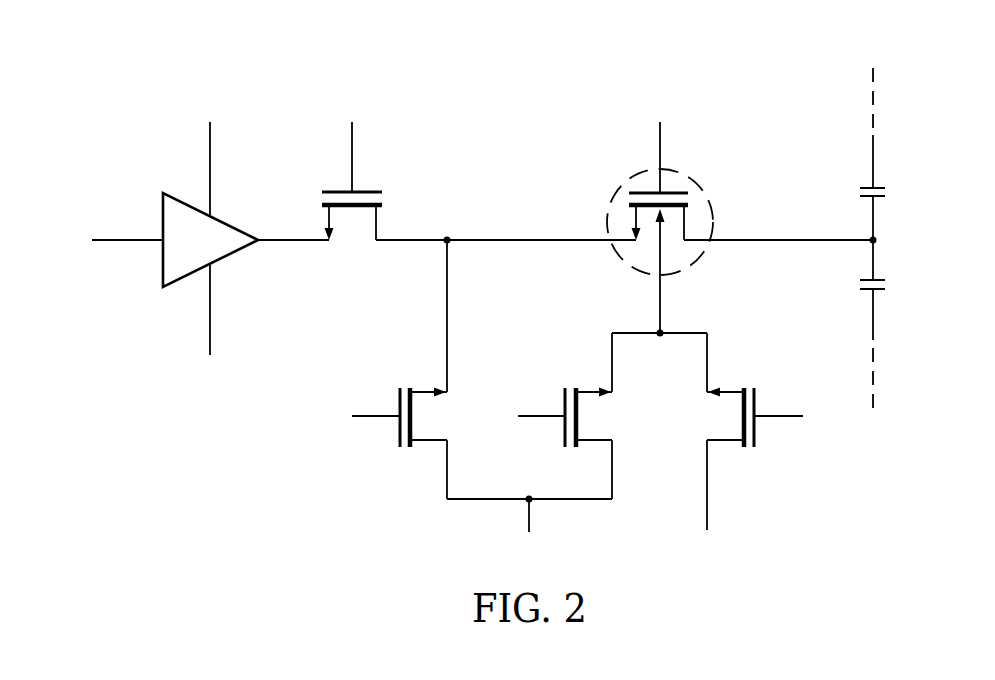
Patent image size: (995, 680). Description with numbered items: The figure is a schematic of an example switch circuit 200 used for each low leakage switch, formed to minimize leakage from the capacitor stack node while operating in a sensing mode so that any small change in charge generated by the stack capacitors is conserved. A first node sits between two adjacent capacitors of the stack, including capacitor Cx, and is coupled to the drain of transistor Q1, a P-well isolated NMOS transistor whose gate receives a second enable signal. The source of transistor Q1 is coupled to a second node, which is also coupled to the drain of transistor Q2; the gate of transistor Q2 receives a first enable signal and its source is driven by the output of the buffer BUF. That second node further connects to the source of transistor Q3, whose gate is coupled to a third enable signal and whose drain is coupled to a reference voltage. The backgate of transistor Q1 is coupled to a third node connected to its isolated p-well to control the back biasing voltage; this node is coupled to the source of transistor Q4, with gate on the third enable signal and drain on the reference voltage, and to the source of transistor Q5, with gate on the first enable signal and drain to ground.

The switch circuit 200 is at (265, 57).
The buffer BUF is at (210, 240).
The isolated NMOS transistor Q1 is at (660, 227).
The transistor Q2 is at (333, 181).
The transistor Q3 is at (399, 434).
The transistor Q4 is at (565, 434).
The transistor Q5 is at (755, 434).
The capacitor Cx is at (892, 287).